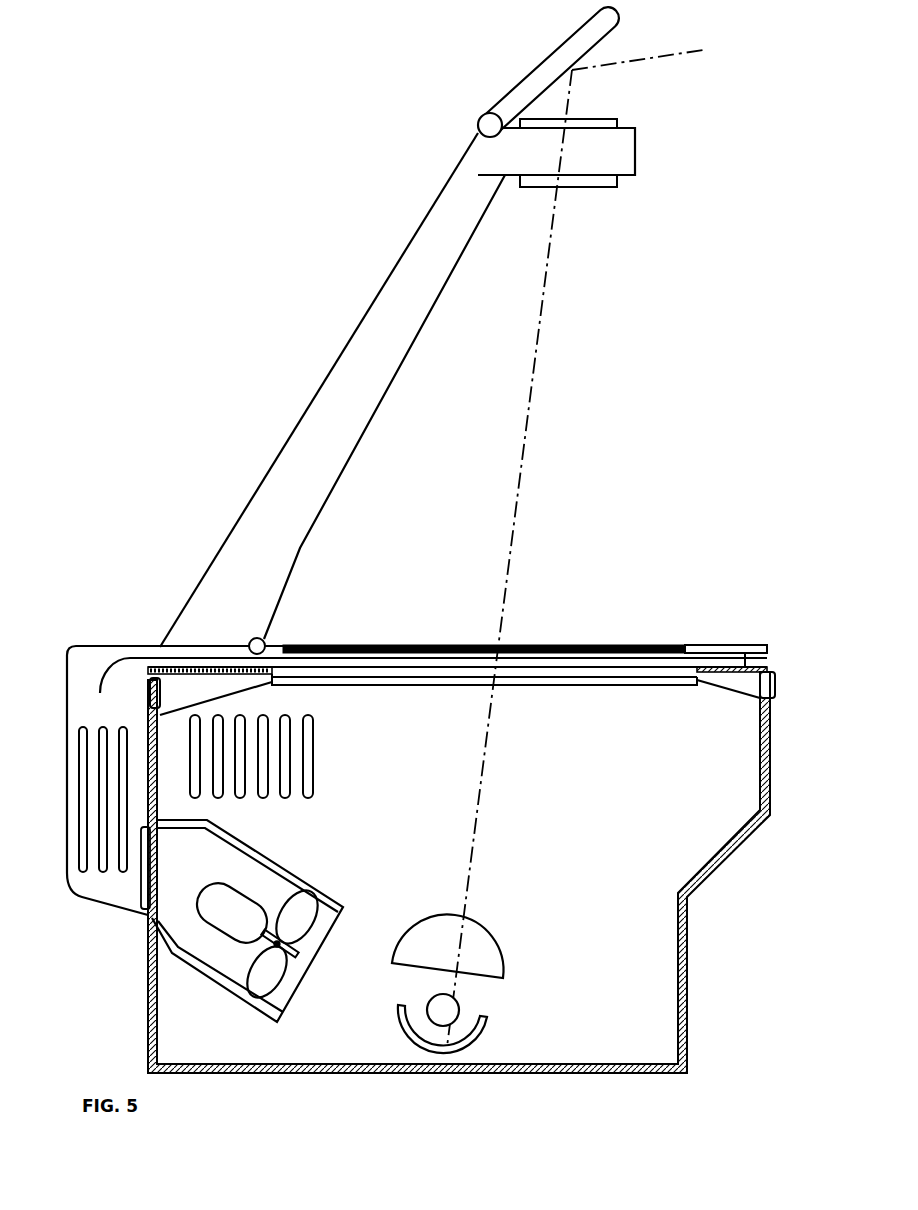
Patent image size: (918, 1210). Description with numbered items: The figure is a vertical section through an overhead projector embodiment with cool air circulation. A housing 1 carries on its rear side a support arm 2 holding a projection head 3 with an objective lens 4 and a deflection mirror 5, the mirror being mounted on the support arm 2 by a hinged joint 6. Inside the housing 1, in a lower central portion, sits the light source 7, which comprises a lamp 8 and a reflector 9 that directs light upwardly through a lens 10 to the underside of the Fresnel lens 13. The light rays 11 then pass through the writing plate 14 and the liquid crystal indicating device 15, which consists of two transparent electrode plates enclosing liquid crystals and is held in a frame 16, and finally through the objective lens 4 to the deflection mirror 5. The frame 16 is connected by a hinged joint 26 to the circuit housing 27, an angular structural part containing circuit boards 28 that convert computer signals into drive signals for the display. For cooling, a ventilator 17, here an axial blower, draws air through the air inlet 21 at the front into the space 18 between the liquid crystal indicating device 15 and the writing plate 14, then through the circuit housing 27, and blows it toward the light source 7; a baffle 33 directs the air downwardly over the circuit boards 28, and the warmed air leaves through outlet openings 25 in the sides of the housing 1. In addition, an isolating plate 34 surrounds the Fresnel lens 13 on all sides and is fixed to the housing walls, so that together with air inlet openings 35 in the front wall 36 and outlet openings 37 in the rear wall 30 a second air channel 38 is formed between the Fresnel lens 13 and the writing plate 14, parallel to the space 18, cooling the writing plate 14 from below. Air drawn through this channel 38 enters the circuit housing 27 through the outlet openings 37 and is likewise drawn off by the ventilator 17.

The housing 1 is at (198, 1030).
The support arm 2 is at (386, 309).
The projection head 3 is at (617, 145).
The objective lens 4 is at (597, 180).
The deflection mirror 5 is at (545, 75).
The hinged joint 6 is at (491, 122).
The light source 7 is at (383, 1020).
The lamp 8 is at (440, 1010).
The reflector 9 is at (460, 1043).
The lens 10 is at (490, 970).
The light rays 11 is at (505, 569).
The Fresnel lens 13 is at (367, 683).
The writing plate 14 is at (398, 675).
The liquid crystal indicating device 15 is at (455, 645).
The frame 16 is at (698, 648).
The ventilator 17 is at (272, 933).
The space 18 is at (541, 664).
The air inlet 21 is at (781, 657).
The outlet openings 25 is at (240, 715).
The hinged joint 26 is at (262, 640).
The circuit housing 27 is at (82, 693).
The circuit boards 28 is at (123, 850).
The rear wall 30 is at (150, 1007).
The baffle 33 is at (105, 688).
The isolating plate 34 is at (188, 702).
The air inlet openings 35 is at (772, 696).
The front wall 36 is at (767, 773).
The outlet openings 37 is at (150, 680).
The second air channel 38 is at (213, 687).